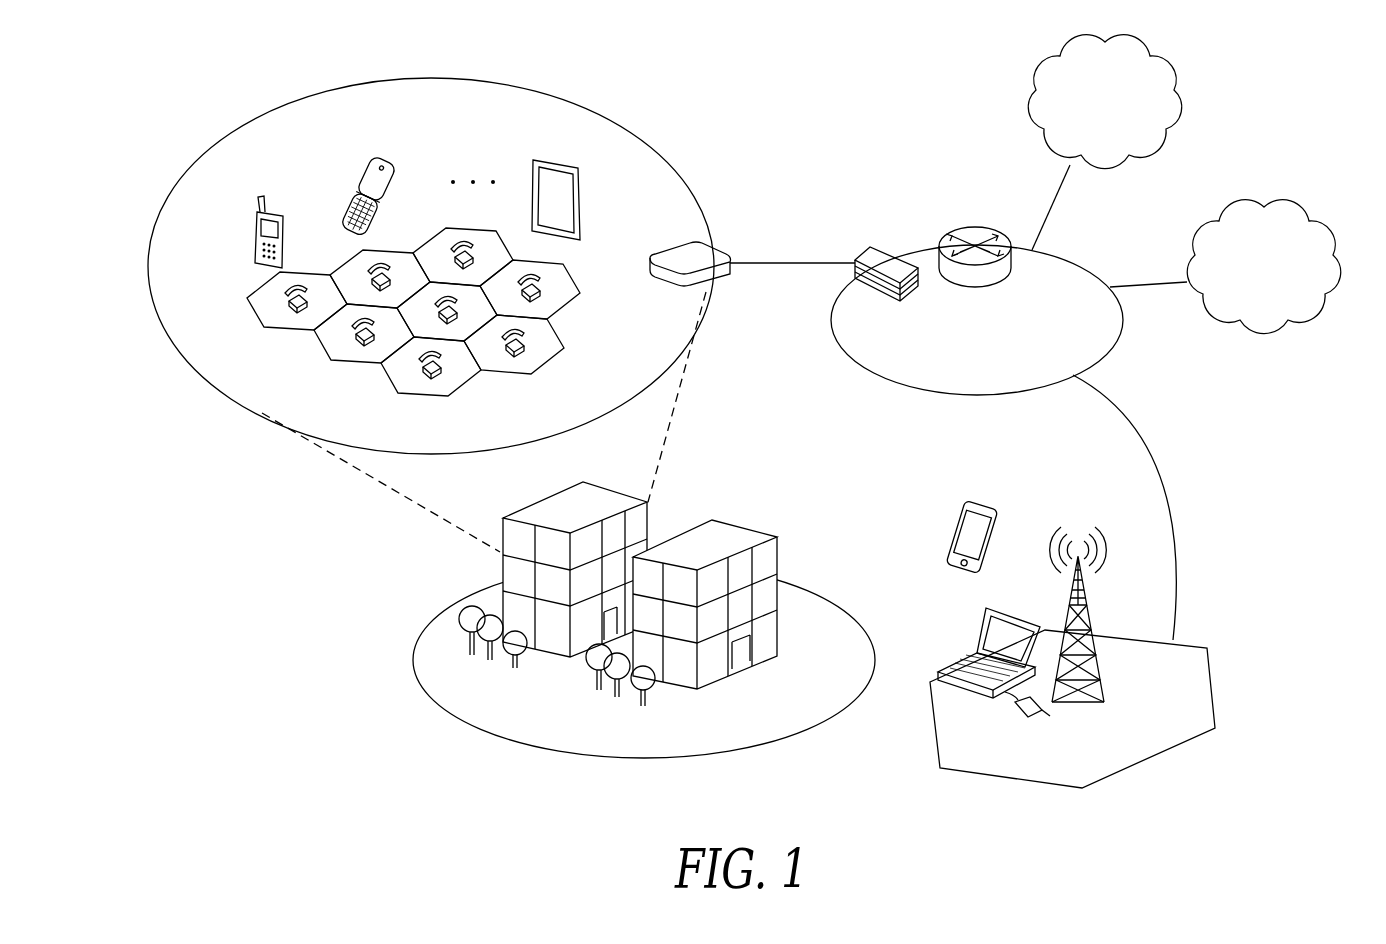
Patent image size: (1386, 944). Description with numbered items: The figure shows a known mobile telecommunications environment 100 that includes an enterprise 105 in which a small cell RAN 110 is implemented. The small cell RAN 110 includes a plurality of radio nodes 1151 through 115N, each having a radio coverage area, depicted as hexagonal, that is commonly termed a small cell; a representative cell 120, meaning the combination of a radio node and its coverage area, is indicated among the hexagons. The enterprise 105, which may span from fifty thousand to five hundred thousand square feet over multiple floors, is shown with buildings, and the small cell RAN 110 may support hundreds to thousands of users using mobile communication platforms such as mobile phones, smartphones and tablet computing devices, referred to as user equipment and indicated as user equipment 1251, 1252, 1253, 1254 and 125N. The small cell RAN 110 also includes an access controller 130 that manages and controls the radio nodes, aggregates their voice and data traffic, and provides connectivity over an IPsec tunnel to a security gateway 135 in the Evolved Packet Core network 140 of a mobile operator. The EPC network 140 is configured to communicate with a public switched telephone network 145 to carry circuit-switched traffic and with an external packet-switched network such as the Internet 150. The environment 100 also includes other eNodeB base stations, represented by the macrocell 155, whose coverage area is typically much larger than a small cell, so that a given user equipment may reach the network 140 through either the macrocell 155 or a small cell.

The mobile telecommunications environment 100 is at (130, 93).
The enterprise 105 is at (413, 655).
The small cell RAN 110 is at (500, 83).
The radio node 115N is at (535, 295).
The radio node 1151 is at (537, 350).
The cell 120 is at (571, 276).
The user equipment 1251 is at (957, 522).
The user equipment 1252 is at (975, 630).
The user equipment 1253 is at (255, 233).
The user equipment 1254 is at (369, 175).
The user equipment 125N is at (560, 160).
The access controller 130 is at (712, 248).
The security gateway 135 is at (877, 247).
The Evolved Packet Core network 140 is at (967, 380).
The public switched telephone network 145 is at (1287, 208).
The Internet 150 is at (1132, 36).
The macrocell 155 is at (1144, 640).